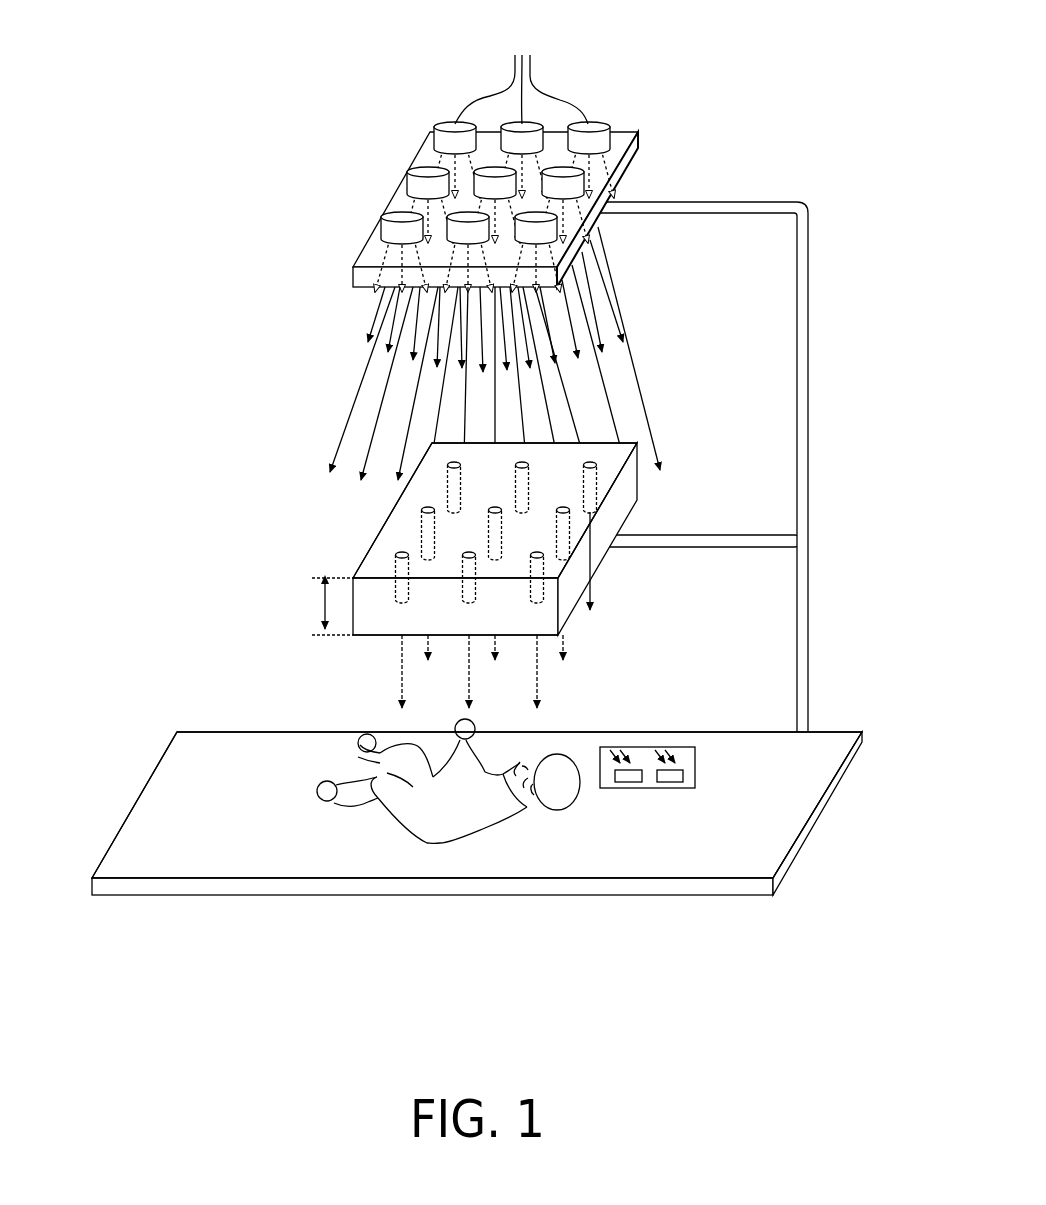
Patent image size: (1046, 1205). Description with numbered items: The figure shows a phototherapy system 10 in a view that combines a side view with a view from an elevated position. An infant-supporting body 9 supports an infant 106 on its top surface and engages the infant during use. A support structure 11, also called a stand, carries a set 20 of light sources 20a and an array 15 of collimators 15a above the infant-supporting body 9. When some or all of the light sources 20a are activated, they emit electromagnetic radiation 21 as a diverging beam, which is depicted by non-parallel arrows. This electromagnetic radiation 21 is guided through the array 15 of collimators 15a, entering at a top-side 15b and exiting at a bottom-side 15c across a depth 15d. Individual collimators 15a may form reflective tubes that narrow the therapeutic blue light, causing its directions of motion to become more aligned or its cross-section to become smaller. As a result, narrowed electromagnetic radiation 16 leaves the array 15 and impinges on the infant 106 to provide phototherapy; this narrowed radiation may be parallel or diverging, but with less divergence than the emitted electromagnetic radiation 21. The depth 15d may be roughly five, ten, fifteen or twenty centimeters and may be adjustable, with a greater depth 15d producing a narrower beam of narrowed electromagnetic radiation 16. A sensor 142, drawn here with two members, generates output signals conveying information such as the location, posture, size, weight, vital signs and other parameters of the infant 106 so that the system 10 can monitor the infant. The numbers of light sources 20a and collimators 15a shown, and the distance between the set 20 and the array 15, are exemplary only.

The infant-supporting body 9 is at (190, 773).
The phototherapy system 10 is at (150, 887).
The support structure 11 is at (808, 656).
The array of collimators 15 is at (646, 513).
The collimator 15a is at (430, 510).
The top-side 15b is at (380, 556).
The bottom-side 15c is at (378, 637).
The depth 15d is at (320, 606).
The narrowed electromagnetic radiation 16 is at (400, 688).
The set of light sources 20 is at (342, 241).
The light source 20a is at (521, 78).
The electromagnetic radiation 21 is at (352, 414).
The infant 106 is at (440, 822).
The sensor 142 is at (697, 766).